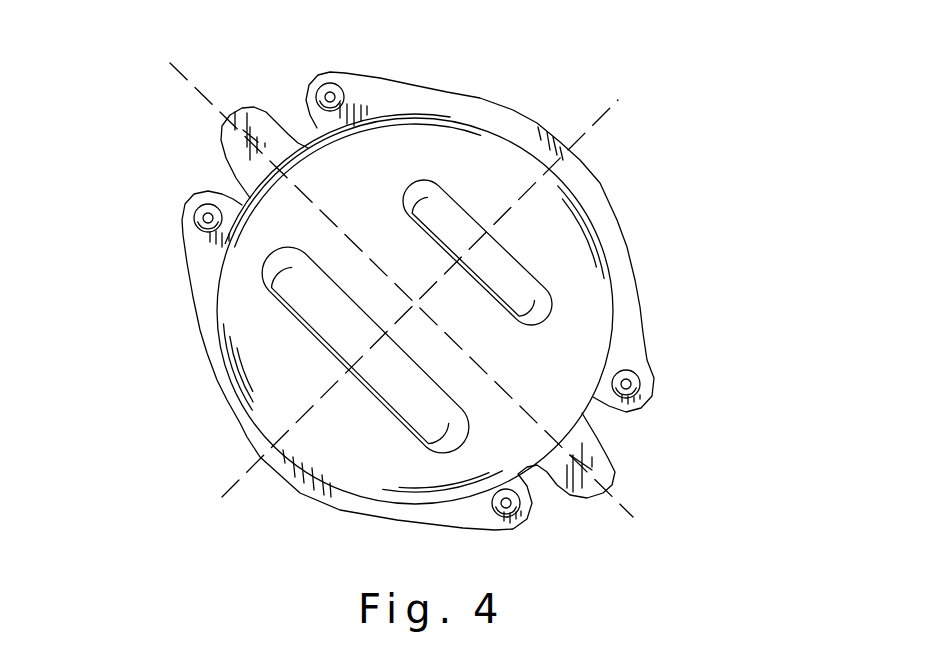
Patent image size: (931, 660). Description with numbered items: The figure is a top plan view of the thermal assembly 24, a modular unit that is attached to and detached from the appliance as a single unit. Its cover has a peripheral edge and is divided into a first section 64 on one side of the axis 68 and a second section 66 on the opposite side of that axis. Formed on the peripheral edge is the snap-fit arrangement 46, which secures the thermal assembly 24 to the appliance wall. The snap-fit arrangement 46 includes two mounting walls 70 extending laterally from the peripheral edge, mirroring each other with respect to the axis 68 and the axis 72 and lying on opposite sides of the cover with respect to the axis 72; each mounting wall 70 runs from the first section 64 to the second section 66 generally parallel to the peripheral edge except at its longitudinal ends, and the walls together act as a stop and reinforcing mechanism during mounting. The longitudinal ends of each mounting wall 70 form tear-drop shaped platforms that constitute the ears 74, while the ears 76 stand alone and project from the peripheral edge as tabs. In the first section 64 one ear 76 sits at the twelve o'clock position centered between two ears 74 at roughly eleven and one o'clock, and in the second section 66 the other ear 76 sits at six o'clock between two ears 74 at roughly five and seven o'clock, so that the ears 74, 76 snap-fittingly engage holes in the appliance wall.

The thermal assembly 24 is at (662, 191).
The snap-fit arrangement 46 is at (103, 106).
The first section 64 is at (340, 184).
The second section 66 is at (528, 392).
The axis 68 is at (232, 478).
The mounting walls 70 is at (210, 343).
The axis 72 is at (182, 71).
The ears 74 is at (300, 86).
The ears 76 is at (205, 140).